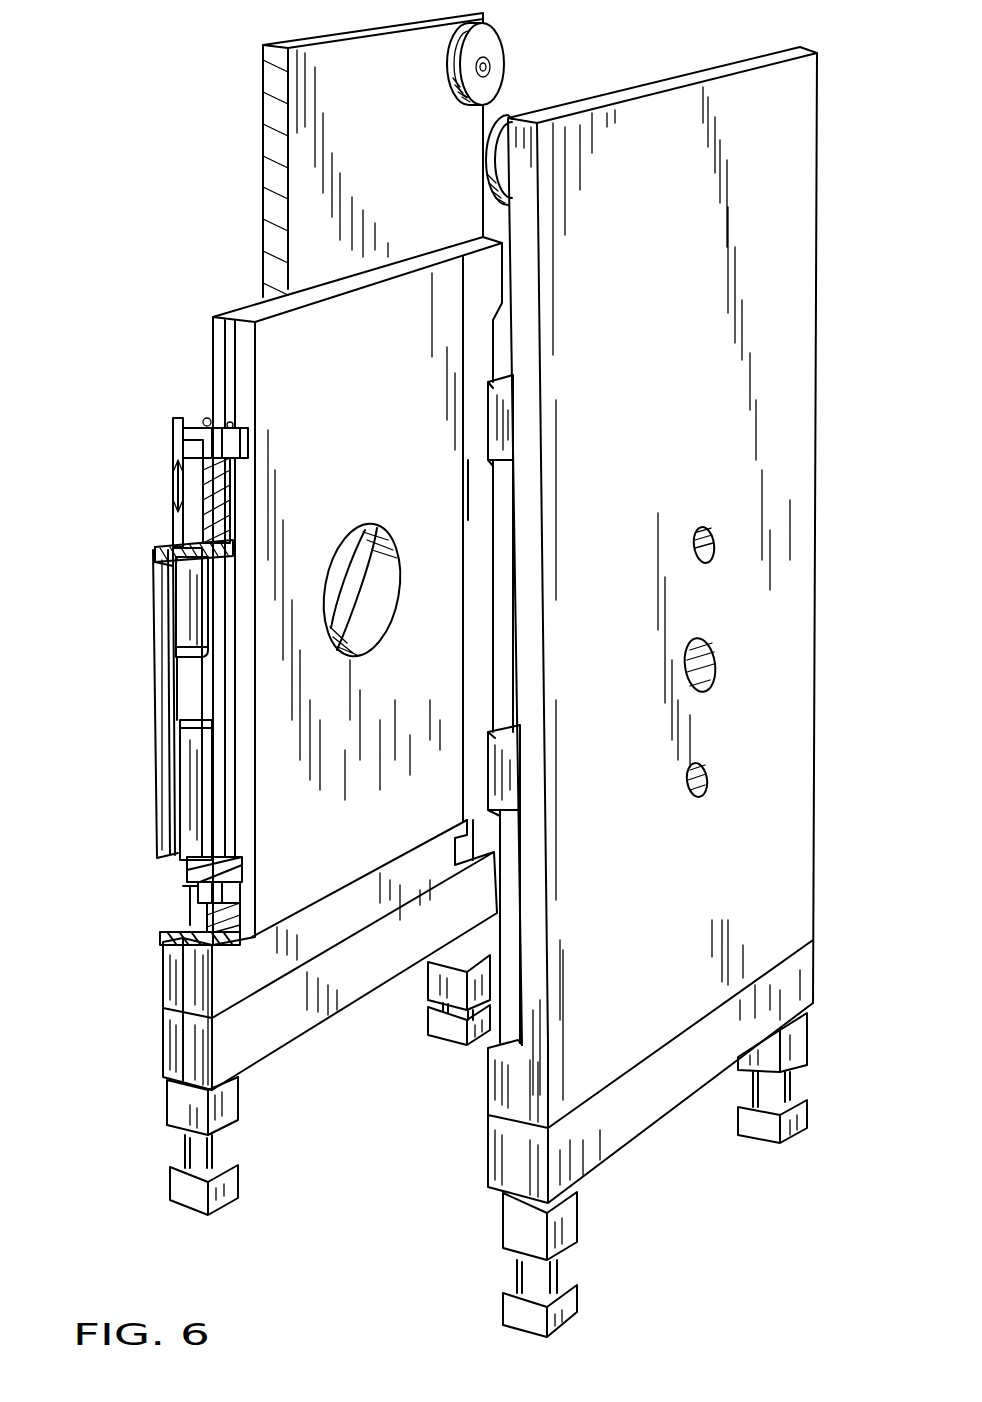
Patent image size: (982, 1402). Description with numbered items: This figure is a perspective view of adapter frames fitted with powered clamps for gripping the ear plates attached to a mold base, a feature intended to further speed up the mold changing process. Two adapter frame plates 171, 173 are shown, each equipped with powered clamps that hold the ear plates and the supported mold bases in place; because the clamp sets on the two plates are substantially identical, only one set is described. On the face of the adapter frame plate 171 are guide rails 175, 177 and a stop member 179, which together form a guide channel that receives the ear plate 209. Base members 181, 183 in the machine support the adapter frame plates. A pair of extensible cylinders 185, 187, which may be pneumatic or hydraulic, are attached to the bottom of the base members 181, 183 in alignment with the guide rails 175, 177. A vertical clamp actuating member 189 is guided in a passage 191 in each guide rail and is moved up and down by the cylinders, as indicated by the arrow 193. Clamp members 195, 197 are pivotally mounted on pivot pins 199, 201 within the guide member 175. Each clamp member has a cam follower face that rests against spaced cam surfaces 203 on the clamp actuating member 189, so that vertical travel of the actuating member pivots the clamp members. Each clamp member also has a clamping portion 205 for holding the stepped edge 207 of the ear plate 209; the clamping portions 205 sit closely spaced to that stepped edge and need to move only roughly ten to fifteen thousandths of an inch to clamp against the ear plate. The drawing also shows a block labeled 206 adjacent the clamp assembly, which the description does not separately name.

The adapter frame plate 171 is at (400, 164).
The adapter frame plate 173 is at (716, 253).
The guide rail 175 is at (505, 425).
The guide rail 177 is at (475, 275).
The stop member 179 is at (407, 872).
The base member 181 is at (173, 1035).
The base member 183 is at (657, 1095).
The extensible cylinder 185 is at (175, 1113).
The extensible cylinder 187 is at (448, 965).
The clamp actuating member 189 is at (173, 432).
The passage 191 is at (155, 555).
The arrow 193 is at (172, 547).
The clamp member 195 is at (182, 430).
The clamp member 197 is at (196, 888).
The pivot pin 199 is at (208, 418).
The pivot pin 201 is at (250, 870).
The cam surface 203 is at (207, 485).
The clamping portion 205 is at (177, 470).
The block 206 is at (232, 444).
The stepped edge 207 is at (232, 327).
The ear plate 209 is at (408, 403).